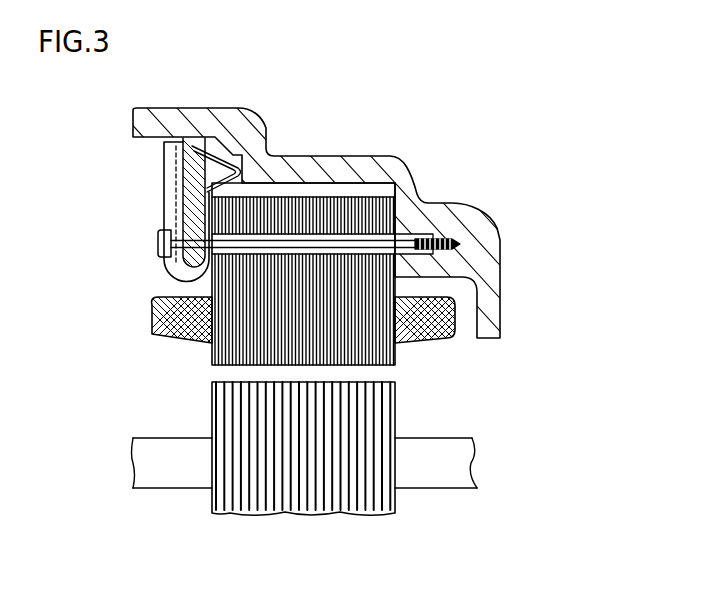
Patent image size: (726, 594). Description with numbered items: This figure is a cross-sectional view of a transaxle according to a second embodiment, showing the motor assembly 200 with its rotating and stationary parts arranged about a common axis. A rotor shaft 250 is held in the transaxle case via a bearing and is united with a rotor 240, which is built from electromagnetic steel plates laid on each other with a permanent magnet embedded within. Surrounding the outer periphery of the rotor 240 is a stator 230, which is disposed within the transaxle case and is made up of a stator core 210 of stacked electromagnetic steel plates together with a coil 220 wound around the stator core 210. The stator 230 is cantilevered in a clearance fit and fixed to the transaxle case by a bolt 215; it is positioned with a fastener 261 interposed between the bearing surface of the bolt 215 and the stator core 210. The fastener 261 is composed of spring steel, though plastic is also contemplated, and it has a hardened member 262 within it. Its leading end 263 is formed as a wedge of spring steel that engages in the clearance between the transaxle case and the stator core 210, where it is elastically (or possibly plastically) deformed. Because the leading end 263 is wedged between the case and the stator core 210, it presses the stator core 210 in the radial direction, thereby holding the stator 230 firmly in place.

The motor 200 is at (402, 92).
The stator core 210 is at (232, 353).
The bolt 215 is at (158, 246).
The coil 220 is at (150, 316).
The stator 230 is at (278, 280).
The rotor 240 is at (267, 500).
The rotor shaft 250 is at (173, 472).
The fastener 261 is at (164, 161).
The hardened member 262 is at (186, 189).
The leading end 263 is at (208, 193).